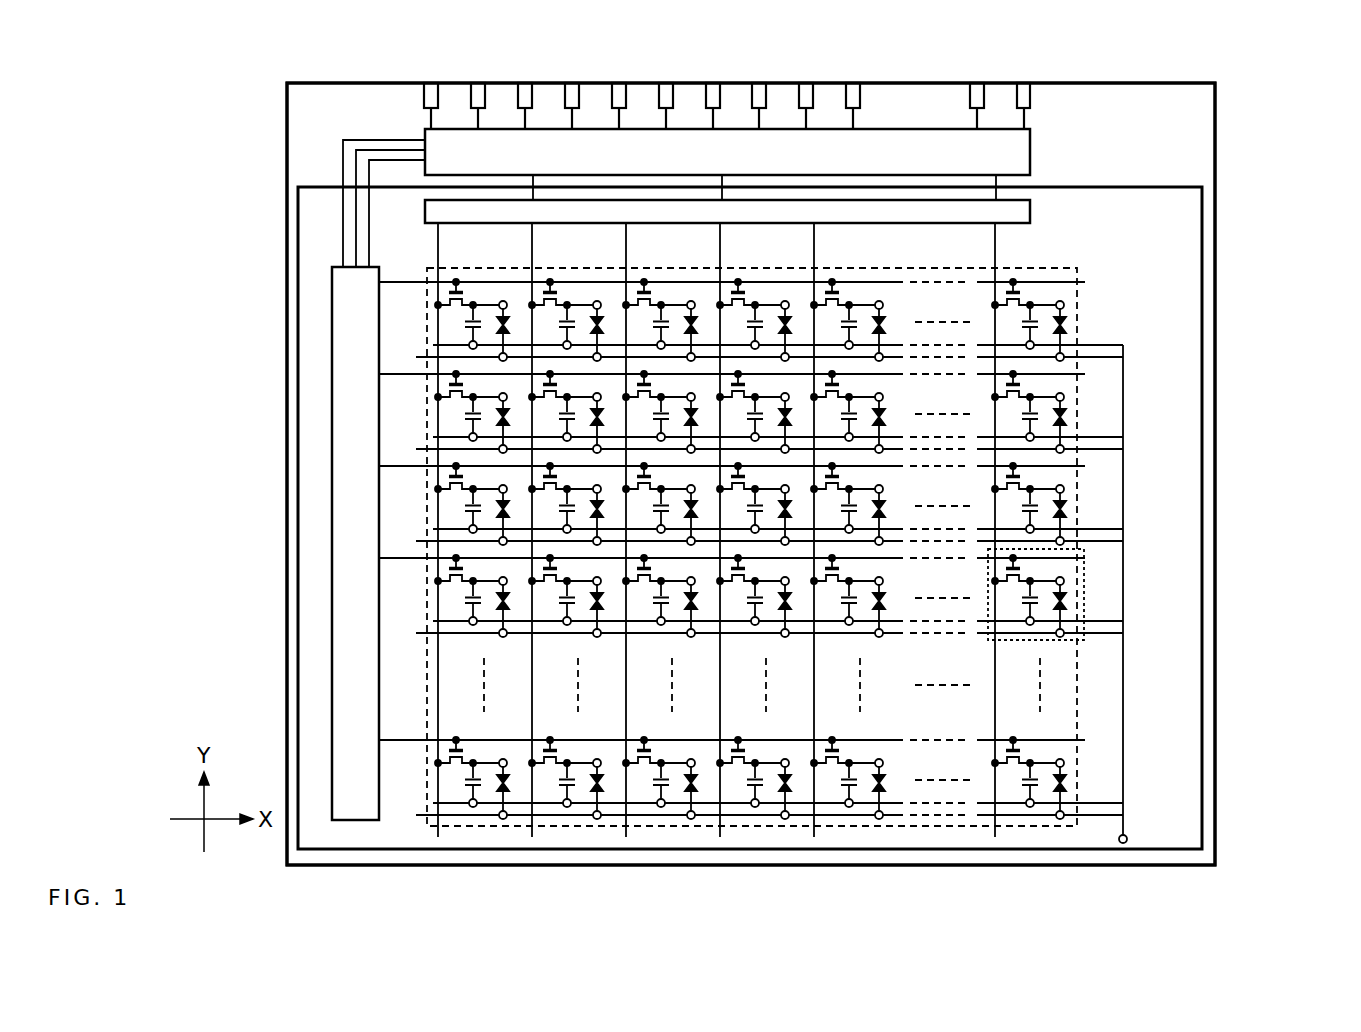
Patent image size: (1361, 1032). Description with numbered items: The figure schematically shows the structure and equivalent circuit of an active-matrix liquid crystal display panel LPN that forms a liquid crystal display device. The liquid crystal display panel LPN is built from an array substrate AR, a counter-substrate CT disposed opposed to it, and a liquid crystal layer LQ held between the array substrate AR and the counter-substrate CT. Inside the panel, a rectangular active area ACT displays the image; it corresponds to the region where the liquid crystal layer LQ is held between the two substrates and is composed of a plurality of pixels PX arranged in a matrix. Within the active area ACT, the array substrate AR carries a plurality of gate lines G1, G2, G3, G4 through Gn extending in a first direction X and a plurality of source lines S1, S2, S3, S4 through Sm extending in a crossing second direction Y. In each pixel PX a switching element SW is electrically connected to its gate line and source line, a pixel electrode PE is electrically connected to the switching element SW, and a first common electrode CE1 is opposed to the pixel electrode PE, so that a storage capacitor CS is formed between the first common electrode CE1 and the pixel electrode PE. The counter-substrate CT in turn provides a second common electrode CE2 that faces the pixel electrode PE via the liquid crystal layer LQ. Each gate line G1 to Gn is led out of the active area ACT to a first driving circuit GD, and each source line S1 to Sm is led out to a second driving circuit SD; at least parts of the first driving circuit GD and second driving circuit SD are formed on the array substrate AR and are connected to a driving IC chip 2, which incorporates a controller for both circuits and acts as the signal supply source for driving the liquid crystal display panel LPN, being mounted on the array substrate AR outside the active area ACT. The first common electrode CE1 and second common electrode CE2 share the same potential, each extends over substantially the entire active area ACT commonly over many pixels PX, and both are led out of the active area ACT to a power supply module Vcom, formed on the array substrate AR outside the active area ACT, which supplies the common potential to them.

The liquid crystal display panel LPN is at (1262, 91).
The array substrate AR is at (1190, 137).
The counter-substrate CT is at (1203, 246).
The driving IC chip 2 is at (1031, 128).
The second driving circuit SD is at (1031, 211).
The first driving circuit GD is at (331, 666).
The gate line G1 is at (397, 280).
The gate line G2 is at (397, 372).
The gate line G3 is at (397, 464).
The gate line G4 is at (397, 556).
The gate line Gn is at (397, 738).
The source line S1 is at (439, 243).
The source line S2 is at (533, 243).
The source line S3 is at (627, 243).
The source line S4 is at (721, 243).
The source line Sm is at (996, 243).
The active area ACT is at (1077, 392).
The pixel PX is at (1082, 642).
The switching element SW is at (1000, 572).
The storage capacitor CS is at (1021, 604).
The pixel electrode PE is at (1065, 580).
The liquid crystal layer LQ is at (1066, 598).
The first common electrode CE1 is at (1036, 626).
The second common electrode CE2 is at (1066, 620).
The power supply module Vcom is at (1120, 846).